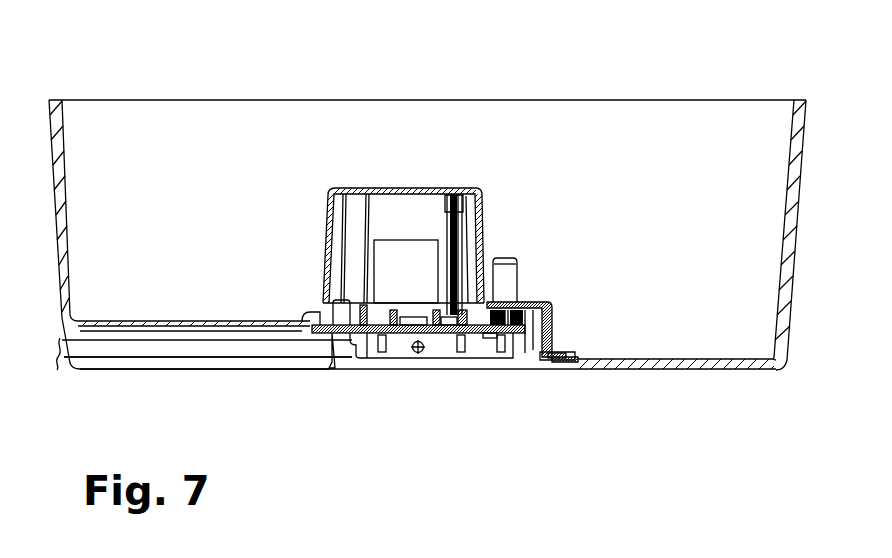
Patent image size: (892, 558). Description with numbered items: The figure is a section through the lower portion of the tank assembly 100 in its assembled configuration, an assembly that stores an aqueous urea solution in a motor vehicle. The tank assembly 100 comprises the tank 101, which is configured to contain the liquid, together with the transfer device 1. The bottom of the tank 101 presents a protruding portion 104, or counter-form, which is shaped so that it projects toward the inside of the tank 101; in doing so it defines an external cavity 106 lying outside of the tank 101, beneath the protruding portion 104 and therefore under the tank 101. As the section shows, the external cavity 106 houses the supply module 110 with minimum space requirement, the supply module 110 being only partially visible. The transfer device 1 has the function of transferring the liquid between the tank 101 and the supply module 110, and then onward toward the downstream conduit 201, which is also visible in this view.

The tank assembly 100 is at (130, 90).
The tank 101 is at (62, 135).
The protruding portion 104 is at (327, 237).
The external cavity 106 is at (399, 217).
The supply module 110 is at (426, 283).
The transfer device 1 is at (561, 326).
The downstream conduit 201 is at (116, 343).